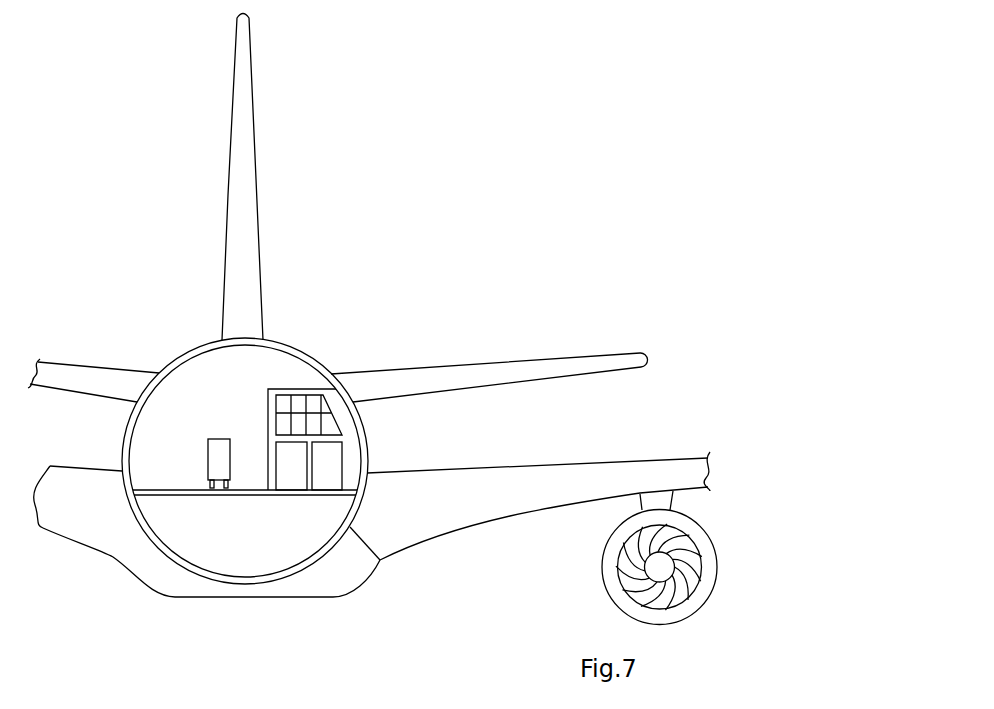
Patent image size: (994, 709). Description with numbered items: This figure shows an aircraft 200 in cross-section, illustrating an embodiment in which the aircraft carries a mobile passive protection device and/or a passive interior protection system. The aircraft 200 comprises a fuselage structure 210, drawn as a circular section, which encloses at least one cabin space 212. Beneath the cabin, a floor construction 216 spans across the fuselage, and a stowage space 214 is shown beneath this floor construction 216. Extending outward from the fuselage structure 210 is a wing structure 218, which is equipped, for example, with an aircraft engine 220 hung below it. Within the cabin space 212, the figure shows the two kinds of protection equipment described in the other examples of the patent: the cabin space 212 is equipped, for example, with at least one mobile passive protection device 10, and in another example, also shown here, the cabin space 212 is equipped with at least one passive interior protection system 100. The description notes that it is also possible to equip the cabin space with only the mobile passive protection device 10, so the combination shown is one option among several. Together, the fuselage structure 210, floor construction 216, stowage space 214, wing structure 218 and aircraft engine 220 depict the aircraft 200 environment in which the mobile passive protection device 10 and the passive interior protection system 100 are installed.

The aircraft 200 is at (122, 277).
The fuselage structure 210 is at (298, 345).
The cabin space 212 is at (240, 404).
The stowage space 214 is at (215, 536).
The floor construction 216 is at (167, 497).
The wing structure 218 is at (566, 474).
The aircraft engine 220 is at (602, 578).
The passive interior protection system 100 is at (268, 389).
The mobile passive protection device 10 is at (216, 439).